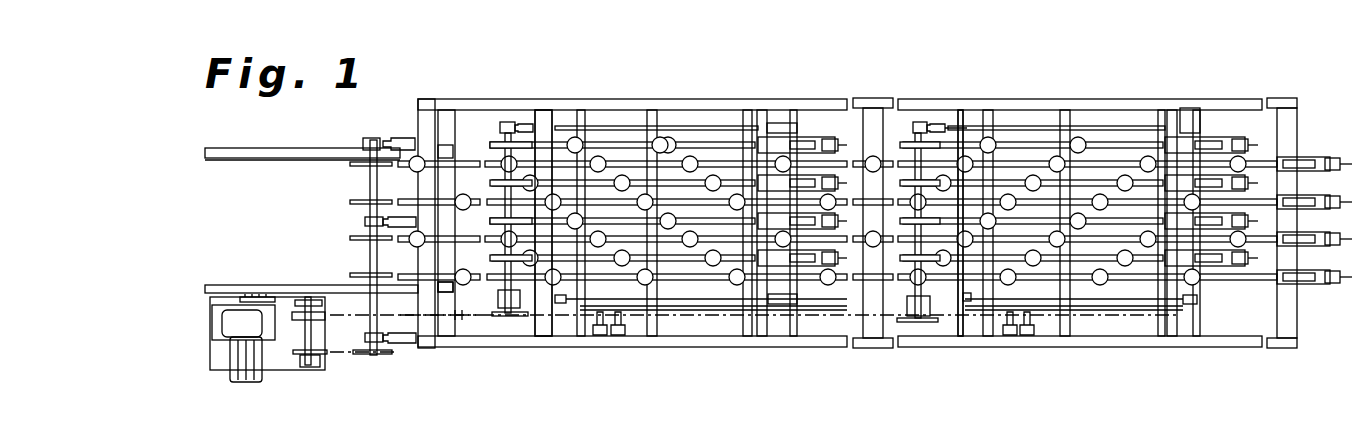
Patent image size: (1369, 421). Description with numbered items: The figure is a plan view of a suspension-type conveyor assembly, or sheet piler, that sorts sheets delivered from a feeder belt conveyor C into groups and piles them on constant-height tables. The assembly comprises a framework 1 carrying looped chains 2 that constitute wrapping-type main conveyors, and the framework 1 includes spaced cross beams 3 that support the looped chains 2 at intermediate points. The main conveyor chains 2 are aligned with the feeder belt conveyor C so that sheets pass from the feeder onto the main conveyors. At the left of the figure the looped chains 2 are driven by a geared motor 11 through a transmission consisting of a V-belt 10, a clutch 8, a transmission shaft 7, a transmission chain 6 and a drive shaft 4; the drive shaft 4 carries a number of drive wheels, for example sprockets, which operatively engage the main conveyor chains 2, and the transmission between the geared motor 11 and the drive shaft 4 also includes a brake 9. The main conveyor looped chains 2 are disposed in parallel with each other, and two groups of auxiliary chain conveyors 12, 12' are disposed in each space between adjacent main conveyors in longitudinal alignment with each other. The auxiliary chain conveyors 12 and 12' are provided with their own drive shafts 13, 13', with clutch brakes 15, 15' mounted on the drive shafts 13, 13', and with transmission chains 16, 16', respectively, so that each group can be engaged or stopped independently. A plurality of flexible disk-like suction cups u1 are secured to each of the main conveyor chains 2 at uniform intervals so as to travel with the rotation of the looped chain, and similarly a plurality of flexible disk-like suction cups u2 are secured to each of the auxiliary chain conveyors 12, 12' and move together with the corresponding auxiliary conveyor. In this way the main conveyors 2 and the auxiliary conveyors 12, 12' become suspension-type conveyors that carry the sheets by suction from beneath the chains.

The framework 1 is at (878, 350).
The looped chains 2 is at (733, 160).
The cross beams 3 is at (427, 350).
The drive shaft 4 is at (372, 302).
The transmission chain 6 is at (330, 355).
The transmission shaft 7 is at (305, 340).
The clutch 8 is at (264, 296).
The brake 9 is at (318, 366).
The V-belt 10 is at (290, 300).
The geared motor 11 is at (232, 322).
The auxiliary chain conveyor 12 is at (549, 189).
The auxiliary chain conveyor 12' is at (975, 189).
The drive shaft 13 is at (497, 178).
The drive shaft 13' is at (927, 180).
The clutch brake 15 is at (520, 353).
The clutch brake 15' is at (923, 354).
The transmission chain 16 is at (444, 309).
The transmission chain 16' is at (466, 350).
The suction cups u1 is at (643, 195).
The suction cups u2 is at (620, 176).
The feeder belt conveyor C is at (282, 172).